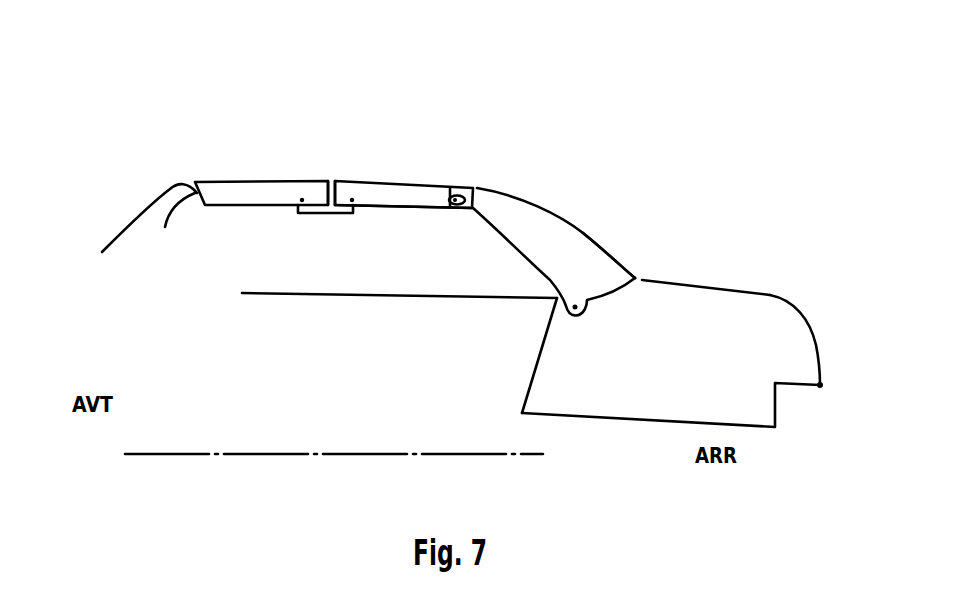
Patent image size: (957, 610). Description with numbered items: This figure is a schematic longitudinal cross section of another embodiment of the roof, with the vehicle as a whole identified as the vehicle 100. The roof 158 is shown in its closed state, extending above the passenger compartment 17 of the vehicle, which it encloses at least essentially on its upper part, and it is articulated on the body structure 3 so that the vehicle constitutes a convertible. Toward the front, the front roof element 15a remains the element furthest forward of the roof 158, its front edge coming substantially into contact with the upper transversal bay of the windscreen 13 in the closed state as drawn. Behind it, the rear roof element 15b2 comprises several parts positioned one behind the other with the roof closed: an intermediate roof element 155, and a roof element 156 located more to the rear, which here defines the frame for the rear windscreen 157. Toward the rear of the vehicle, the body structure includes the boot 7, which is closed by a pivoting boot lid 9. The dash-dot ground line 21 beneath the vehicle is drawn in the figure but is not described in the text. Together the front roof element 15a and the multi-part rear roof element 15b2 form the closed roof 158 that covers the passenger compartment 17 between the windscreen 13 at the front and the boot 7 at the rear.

The windscreen 13 is at (130, 218).
The front roof element 15a is at (253, 182).
The roof 158 is at (343, 165).
The rear roof element 15b2 is at (443, 182).
The intermediate roof element 155 is at (382, 193).
The roof element 156 is at (518, 213).
The rear windscreen 157 is at (591, 231).
The vehicle 100 is at (451, 188).
The passenger compartment 17 is at (399, 270).
The body structure 3 is at (530, 382).
The boot 7 is at (671, 353).
The boot lid 9 is at (738, 288).
The ground line 21 is at (357, 453).